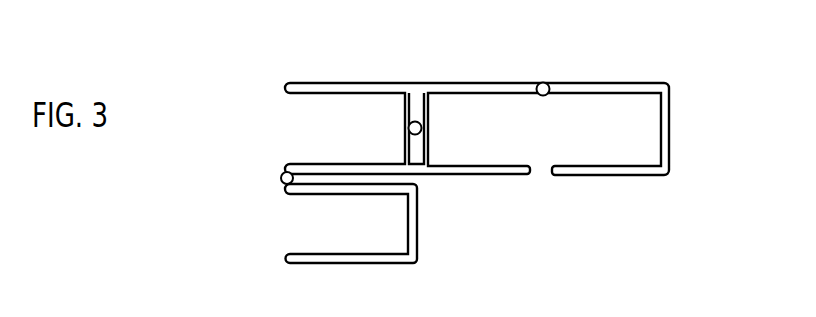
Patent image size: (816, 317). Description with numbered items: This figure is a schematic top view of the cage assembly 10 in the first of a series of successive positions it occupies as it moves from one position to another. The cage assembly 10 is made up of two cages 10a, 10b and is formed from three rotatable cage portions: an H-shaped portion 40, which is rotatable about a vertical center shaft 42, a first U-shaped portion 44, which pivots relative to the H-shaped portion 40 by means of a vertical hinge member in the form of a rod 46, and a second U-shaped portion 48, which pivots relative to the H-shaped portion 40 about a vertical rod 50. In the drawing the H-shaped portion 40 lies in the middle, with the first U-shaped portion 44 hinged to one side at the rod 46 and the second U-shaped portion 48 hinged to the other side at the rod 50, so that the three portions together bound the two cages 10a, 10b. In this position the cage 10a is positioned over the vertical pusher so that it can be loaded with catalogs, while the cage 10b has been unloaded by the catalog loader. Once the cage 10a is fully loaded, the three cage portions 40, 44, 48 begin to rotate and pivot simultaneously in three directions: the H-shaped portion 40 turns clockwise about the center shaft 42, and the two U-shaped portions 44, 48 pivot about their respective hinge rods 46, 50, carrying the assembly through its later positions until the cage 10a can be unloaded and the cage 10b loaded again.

The cage assembly 10 is at (444, 148).
The cage 10a is at (603, 122).
The cage 10b is at (370, 106).
The H-shaped portion 40 is at (382, 82).
The vertical center shaft 42 is at (408, 129).
The first U-shaped portion 44 is at (643, 176).
The rod 46 is at (543, 82).
The second U-shaped portion 48 is at (396, 263).
The vertical rod 50 is at (281, 179).